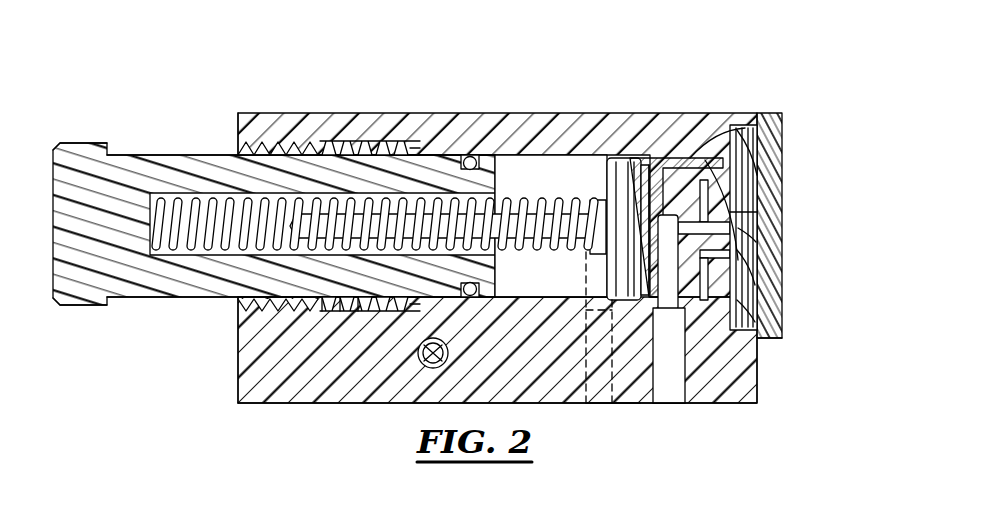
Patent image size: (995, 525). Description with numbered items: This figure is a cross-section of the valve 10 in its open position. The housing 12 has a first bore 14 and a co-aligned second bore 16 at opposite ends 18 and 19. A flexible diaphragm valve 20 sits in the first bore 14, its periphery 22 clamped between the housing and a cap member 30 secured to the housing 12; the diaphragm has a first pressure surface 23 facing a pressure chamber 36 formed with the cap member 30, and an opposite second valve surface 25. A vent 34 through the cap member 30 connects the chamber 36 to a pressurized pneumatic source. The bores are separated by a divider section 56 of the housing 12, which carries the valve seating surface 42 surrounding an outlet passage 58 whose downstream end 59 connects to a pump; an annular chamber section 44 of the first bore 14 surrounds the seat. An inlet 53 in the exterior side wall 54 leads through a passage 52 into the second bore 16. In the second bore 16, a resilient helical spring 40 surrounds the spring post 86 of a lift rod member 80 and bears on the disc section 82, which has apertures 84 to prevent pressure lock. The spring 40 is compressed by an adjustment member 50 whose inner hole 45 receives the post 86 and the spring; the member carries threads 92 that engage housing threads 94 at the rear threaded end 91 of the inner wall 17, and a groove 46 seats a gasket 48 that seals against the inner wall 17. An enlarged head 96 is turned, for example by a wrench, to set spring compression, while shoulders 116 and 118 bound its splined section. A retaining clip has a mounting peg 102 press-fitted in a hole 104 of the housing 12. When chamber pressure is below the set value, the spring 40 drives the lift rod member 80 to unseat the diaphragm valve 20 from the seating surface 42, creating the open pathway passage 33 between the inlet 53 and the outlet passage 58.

The valve 10 is at (715, 88).
The housing 12 is at (608, 122).
The first bore 14 is at (684, 306).
The second bore 16 is at (548, 280).
The inner wall 17 is at (512, 165).
The end 18 is at (757, 394).
The end 19 is at (236, 364).
The flexible diaphragm valve 20 is at (768, 176).
The periphery 22 is at (740, 158).
The first pressure surface 23 is at (770, 256).
The second valve surface 25 is at (762, 310).
The cap member 30 is at (772, 190).
The open pathway passage 33 is at (756, 330).
The vent 34 is at (765, 240).
The pressure chamber 36 is at (776, 140).
The resilient helical spring 40 is at (533, 212).
The valve seating surface 42 is at (760, 214).
The annular chamber section 44 is at (710, 228).
The inner hole 45 is at (208, 198).
The groove 46 is at (469, 156).
The gasket 48 is at (472, 296).
The adjustment member 50 is at (184, 157).
The passage 52 is at (586, 388).
The inlet 53 is at (611, 405).
The exterior side wall 54 is at (625, 405).
The divider section 56 is at (668, 190).
The outlet passage 58 is at (718, 200).
The downstream end 59 is at (667, 405).
The lift rod member 80 is at (612, 166).
The disc section 82 is at (630, 150).
The apertures 84 is at (630, 200).
The spring post 86 is at (571, 210).
The rear threaded end 91 is at (236, 140).
The threads 92 is at (286, 138).
The housing threads 94 is at (385, 145).
The enlarged head 96 is at (86, 150).
The mounting peg 102 is at (433, 370).
The hole 104 is at (426, 356).
The shoulder 116 is at (325, 300).
The shoulder 118 is at (412, 148).